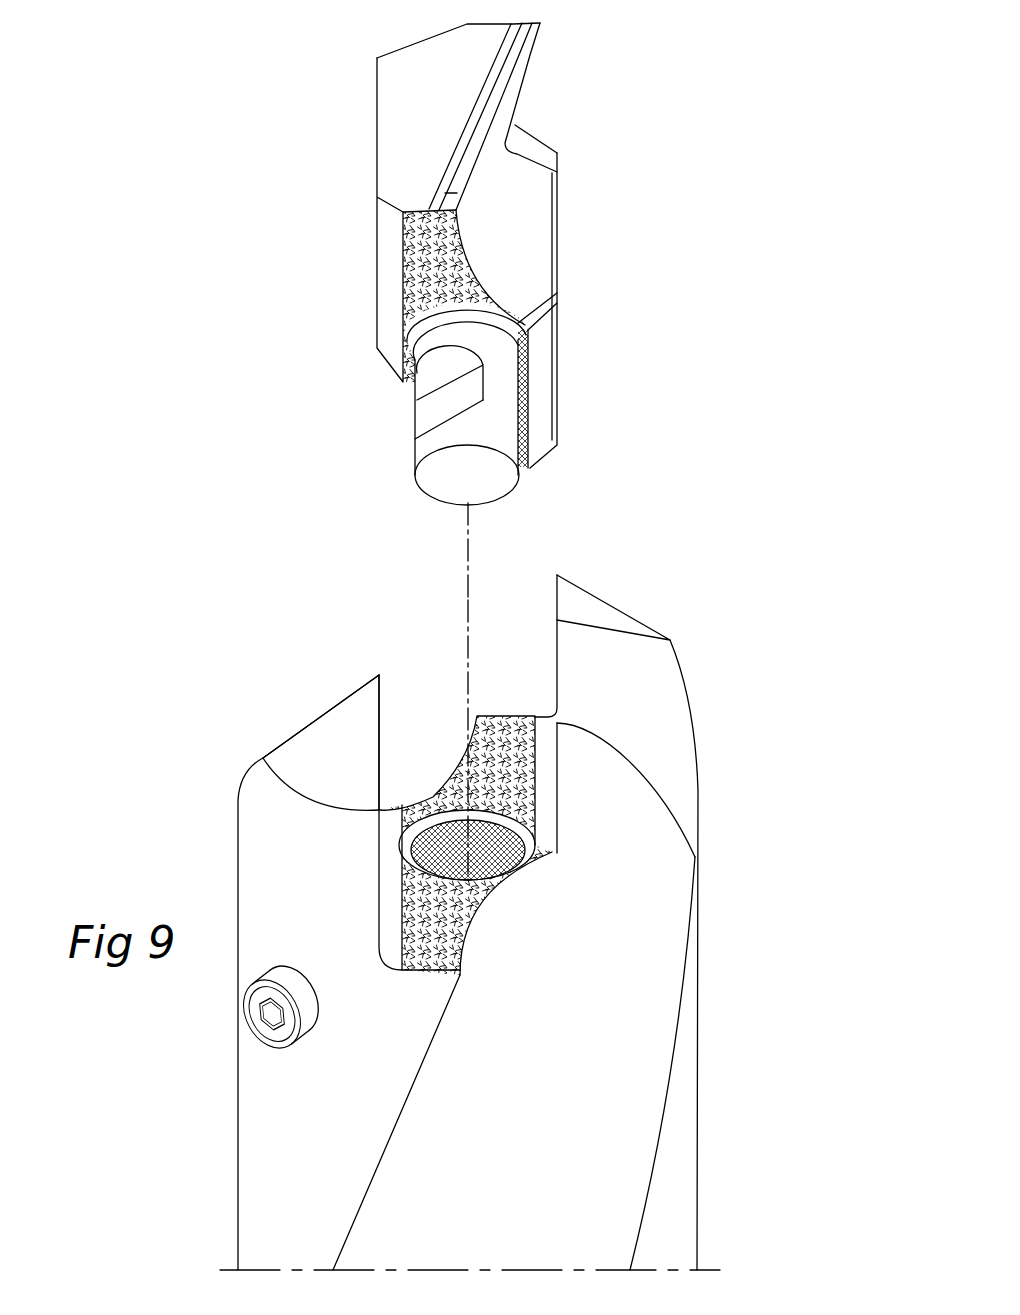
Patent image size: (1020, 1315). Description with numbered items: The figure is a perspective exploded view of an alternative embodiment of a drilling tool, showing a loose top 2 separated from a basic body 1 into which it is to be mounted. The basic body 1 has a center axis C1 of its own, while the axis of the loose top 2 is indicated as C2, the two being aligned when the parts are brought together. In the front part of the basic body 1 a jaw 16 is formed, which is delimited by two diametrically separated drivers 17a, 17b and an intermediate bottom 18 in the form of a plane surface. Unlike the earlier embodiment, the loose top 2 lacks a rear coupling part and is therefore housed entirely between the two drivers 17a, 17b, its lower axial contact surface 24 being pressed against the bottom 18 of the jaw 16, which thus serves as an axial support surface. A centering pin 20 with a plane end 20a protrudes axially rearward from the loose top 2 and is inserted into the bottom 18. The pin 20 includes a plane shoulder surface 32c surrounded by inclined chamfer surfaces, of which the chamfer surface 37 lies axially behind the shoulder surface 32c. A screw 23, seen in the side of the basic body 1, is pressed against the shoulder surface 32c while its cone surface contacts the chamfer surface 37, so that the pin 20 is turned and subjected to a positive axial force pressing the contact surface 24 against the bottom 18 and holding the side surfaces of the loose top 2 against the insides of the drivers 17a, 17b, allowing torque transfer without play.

The basic body 1 is at (507, 886).
The loose top 2 is at (503, 267).
The jaw 16 is at (520, 633).
The driver 17a is at (308, 708).
The driver 17b is at (665, 613).
The bottom 18 is at (486, 783).
The centering pin 20 is at (464, 417).
The plane end 20a is at (490, 480).
The screw 23 is at (317, 1028).
The axial contact surface 24 is at (425, 289).
The shoulder surface 32c is at (428, 413).
The chamfer surface 37 is at (423, 430).
The center axis C1 is at (467, 648).
The pin axis C2 is at (468, 540).